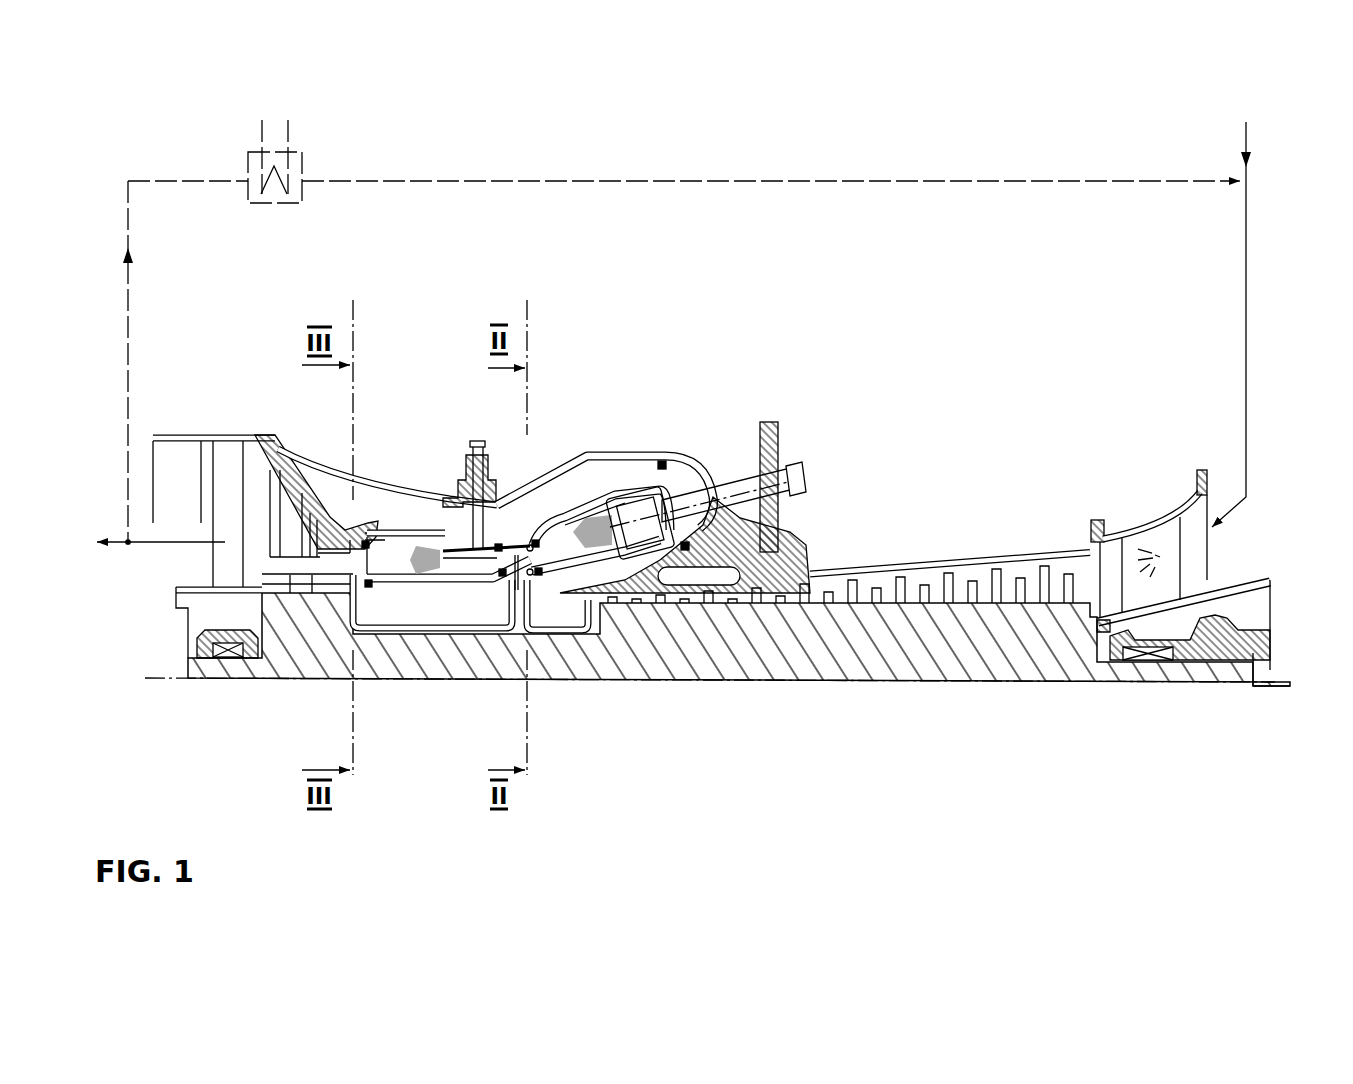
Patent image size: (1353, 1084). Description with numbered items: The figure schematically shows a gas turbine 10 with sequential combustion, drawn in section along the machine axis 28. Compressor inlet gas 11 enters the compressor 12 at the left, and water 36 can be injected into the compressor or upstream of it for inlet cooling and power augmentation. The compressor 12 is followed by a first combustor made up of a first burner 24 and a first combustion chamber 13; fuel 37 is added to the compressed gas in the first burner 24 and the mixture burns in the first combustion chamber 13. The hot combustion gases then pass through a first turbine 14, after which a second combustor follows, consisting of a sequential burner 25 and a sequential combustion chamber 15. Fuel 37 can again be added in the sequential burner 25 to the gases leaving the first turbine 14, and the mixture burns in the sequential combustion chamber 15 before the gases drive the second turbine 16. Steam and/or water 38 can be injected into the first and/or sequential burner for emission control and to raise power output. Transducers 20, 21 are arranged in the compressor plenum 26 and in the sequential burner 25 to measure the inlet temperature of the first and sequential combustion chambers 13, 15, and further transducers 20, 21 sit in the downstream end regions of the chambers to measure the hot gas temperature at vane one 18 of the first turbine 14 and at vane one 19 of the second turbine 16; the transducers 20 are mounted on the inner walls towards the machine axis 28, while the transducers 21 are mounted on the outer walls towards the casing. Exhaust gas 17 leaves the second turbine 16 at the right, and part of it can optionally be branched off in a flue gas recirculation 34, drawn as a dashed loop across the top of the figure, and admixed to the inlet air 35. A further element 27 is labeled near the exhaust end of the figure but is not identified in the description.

The gas turbine 10 is at (652, 312).
The compressor inlet gas 11 is at (1247, 400).
The compressor 12 is at (975, 593).
The first combustion chamber 13 is at (563, 545).
The first turbine 14 is at (518, 640).
The sequential combustion chamber 15 is at (392, 558).
The second turbine 16 is at (275, 540).
The exhaust gas 17 is at (203, 432).
The vane one of first turbine 18 is at (539, 578).
The vane one of second turbine 19 is at (350, 552).
The transducers 20 is at (369, 587).
The transducers 21 is at (366, 541).
The first burner 24 is at (632, 517).
The sequential burner 25 is at (455, 561).
The compressor plenum 26 is at (679, 482).
The exhaust diffuser 27 is at (1152, 512).
The machine axis 28 is at (860, 682).
The flue gas recirculation 34 is at (877, 185).
The inlet air 35 is at (1247, 137).
The water 36 is at (1168, 557).
The fuel 37 is at (473, 437).
The steam and/or water 38 is at (482, 437).